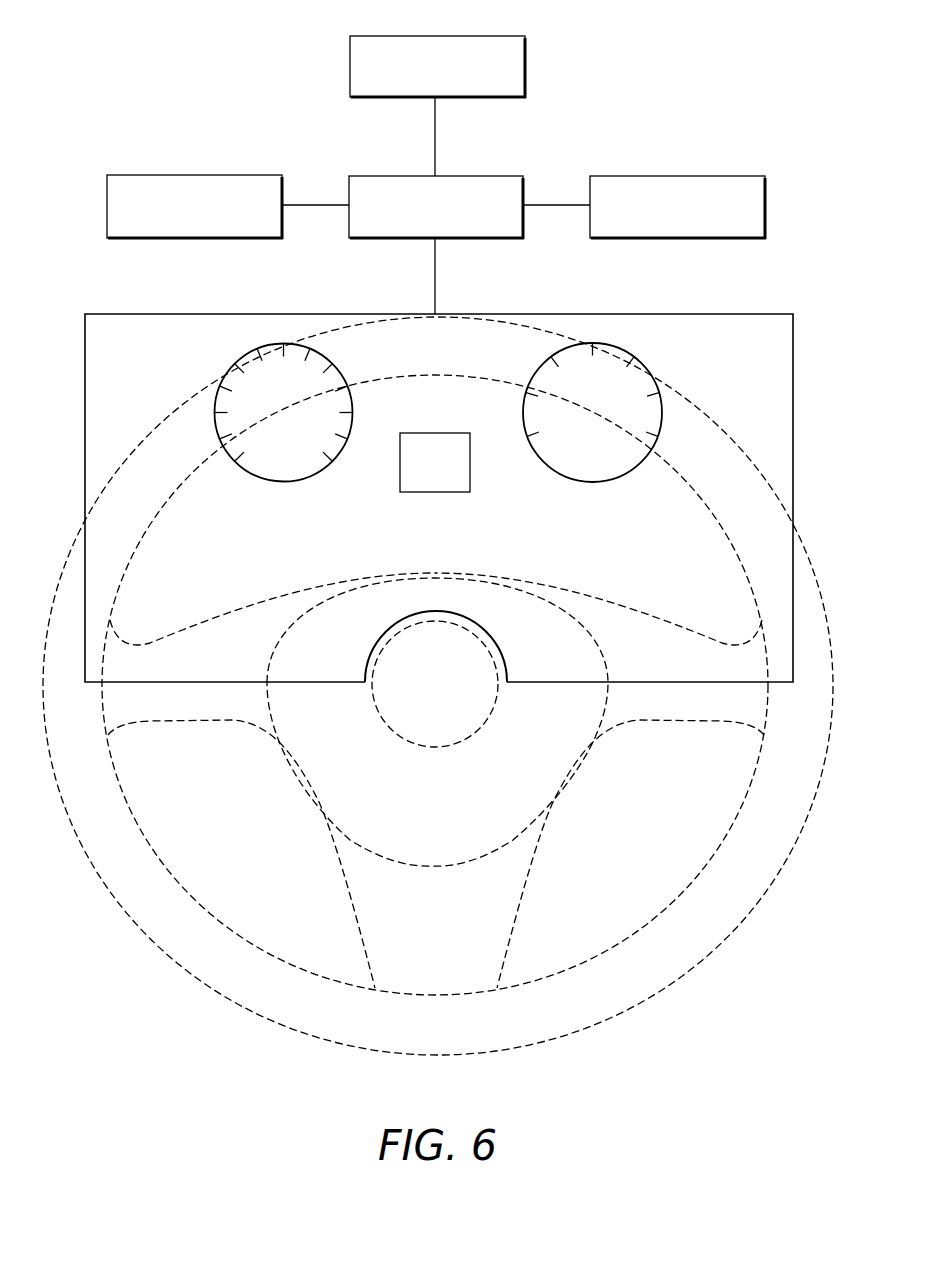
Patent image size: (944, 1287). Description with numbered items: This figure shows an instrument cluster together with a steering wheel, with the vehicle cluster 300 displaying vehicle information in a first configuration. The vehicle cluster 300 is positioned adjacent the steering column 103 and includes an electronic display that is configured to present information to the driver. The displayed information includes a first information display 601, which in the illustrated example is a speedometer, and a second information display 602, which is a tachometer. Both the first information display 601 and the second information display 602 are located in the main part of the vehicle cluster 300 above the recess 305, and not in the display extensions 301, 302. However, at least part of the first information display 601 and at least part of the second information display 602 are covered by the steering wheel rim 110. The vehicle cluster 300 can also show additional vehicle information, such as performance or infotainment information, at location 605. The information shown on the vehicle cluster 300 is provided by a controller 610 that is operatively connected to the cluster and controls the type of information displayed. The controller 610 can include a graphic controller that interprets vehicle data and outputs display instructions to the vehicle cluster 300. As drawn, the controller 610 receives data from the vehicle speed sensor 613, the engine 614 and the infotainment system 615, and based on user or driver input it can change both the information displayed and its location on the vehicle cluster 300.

The engine 614 is at (510, 36).
The vehicle speed sensor 613 is at (267, 175).
The controller 610 is at (510, 176).
The infotainment system 615 is at (750, 176).
The vehicle cluster 300 is at (633, 314).
The steering wheel rim 110 is at (660, 987).
The first display extension part 301 is at (177, 665).
The display extension 302 is at (658, 668).
The recess 305 is at (372, 653).
The steering column 103 is at (488, 717).
The location 605 is at (437, 432).
The first information display 601 is at (268, 481).
The second information display 602 is at (605, 482).